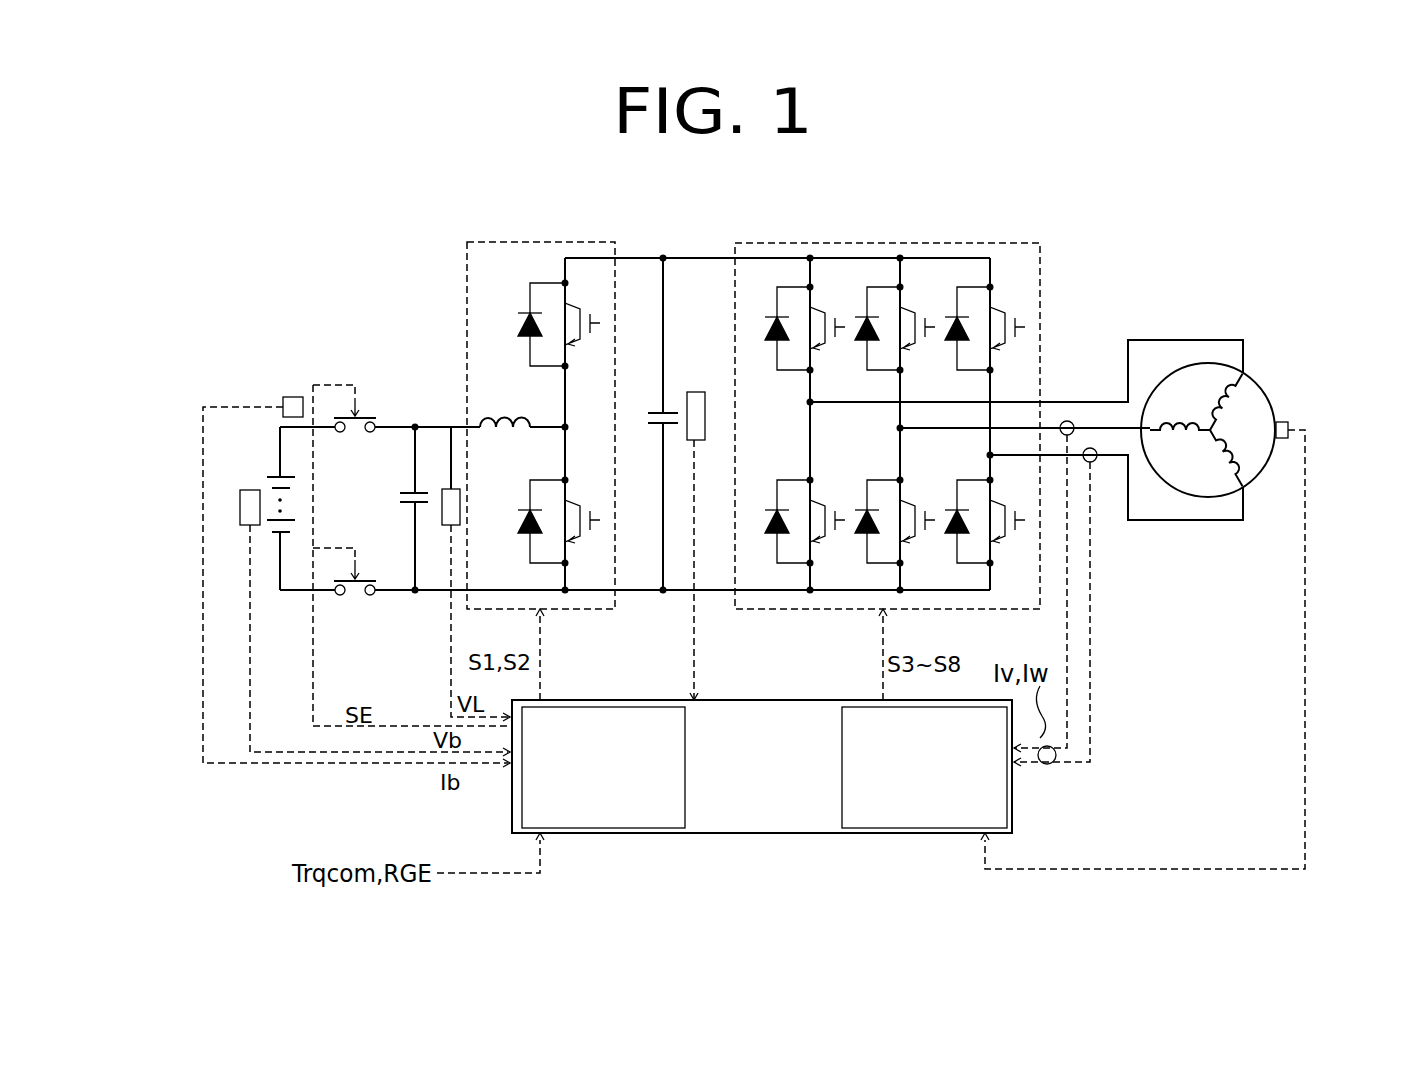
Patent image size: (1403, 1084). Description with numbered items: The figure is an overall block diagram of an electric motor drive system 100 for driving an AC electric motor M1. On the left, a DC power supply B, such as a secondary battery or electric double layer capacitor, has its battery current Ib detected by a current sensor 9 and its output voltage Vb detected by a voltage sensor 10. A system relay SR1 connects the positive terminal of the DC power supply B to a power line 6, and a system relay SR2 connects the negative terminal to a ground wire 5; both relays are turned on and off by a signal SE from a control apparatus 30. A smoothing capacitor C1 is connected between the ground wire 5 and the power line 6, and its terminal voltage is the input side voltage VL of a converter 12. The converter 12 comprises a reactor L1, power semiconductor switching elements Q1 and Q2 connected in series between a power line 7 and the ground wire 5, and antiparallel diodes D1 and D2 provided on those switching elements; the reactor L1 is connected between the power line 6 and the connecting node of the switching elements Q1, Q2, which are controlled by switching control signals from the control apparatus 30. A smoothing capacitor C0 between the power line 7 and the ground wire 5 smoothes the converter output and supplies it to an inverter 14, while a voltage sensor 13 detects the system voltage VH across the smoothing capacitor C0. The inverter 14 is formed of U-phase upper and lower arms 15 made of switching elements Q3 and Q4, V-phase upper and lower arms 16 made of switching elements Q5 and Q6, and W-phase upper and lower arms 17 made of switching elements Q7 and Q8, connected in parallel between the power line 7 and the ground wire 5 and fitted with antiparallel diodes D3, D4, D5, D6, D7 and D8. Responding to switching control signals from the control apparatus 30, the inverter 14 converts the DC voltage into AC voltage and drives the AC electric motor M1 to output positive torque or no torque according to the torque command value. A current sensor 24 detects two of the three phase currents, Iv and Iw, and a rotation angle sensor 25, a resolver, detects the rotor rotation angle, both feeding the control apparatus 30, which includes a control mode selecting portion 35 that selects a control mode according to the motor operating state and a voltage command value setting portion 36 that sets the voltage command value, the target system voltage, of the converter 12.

The electric motor drive system 100 is at (775, 190).
The DC power supply B is at (273, 477).
The voltage sensor 10 is at (293, 397).
The current sensor 9 is at (248, 490).
The system relay SR1 is at (362, 416).
The system relay SR2 is at (362, 581).
The power line 6 is at (440, 427).
The smoothing capacitor C1 is at (404, 493).
The converter 12 is at (540, 242).
The reactor L1 is at (500, 416).
The power semiconductor switching element Q1 is at (585, 324).
The power semiconductor switching element Q2 is at (585, 520).
The antiparallel diode D1 is at (526, 324).
The antiparallel diode D2 is at (530, 527).
The power line 7 is at (704, 256).
The ground wire 5 is at (637, 594).
The smoothing capacitor C0 is at (656, 412).
The voltage sensor 13 is at (695, 392).
The inverter 14 is at (900, 243).
The switching element Q3 is at (831, 327).
The switching element Q4 is at (831, 520).
The switching element Q5 is at (921, 327).
The switching element Q6 is at (921, 520).
The switching element Q7 is at (1011, 327).
The switching element Q8 is at (1011, 520).
The antiparallel diode D3 is at (777, 334).
The antiparallel diode D4 is at (777, 528).
The antiparallel diode D5 is at (866, 334).
The antiparallel diode D6 is at (866, 528).
The antiparallel diode D7 is at (956, 334).
The antiparallel diode D8 is at (956, 528).
The U-phase upper and lower arms 15 is at (795, 417).
The V-phase upper and lower arms 16 is at (886, 441).
The W-phase upper and lower arms 17 is at (978, 466).
The current sensor 24 is at (1067, 421).
The AC electric motor M1 is at (1265, 382).
The rotation angle sensor 25 is at (1284, 422).
The control apparatus 30 is at (828, 700).
The control mode selecting portion 35 is at (605, 833).
The voltage command value setting portion 36 is at (862, 833).